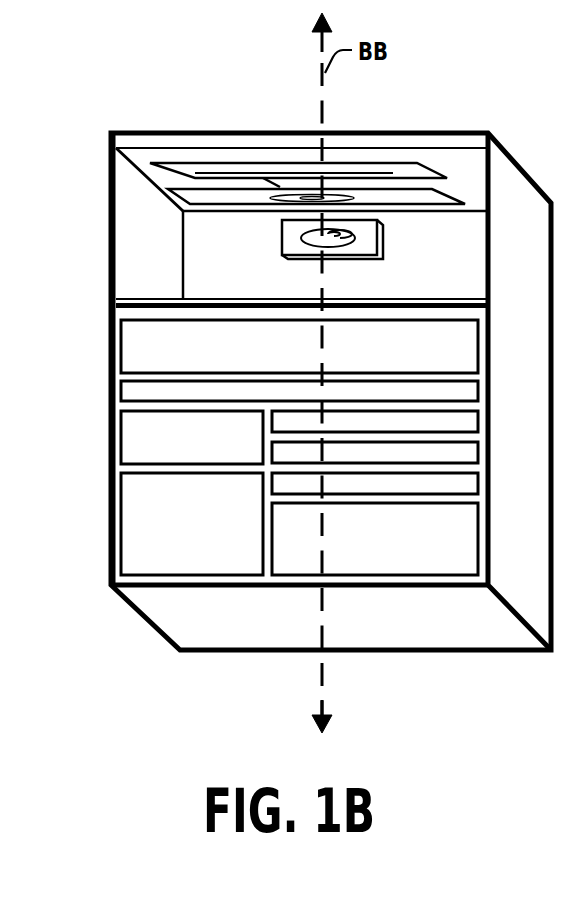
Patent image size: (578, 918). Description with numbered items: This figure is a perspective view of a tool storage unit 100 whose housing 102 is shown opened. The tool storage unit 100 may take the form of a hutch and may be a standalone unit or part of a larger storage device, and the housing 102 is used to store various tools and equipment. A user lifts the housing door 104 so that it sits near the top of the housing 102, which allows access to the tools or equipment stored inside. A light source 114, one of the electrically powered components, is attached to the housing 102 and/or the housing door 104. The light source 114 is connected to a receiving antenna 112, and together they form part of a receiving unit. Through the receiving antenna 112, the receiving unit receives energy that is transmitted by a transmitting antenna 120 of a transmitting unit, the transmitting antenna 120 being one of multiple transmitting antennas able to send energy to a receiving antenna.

The tool storage unit 100 is at (460, 133).
The housing 102 is at (110, 252).
The housing door 104 is at (230, 147).
The receiving antenna 112 is at (182, 211).
The light source 114 is at (348, 162).
The transmitting antenna 120 is at (360, 258).